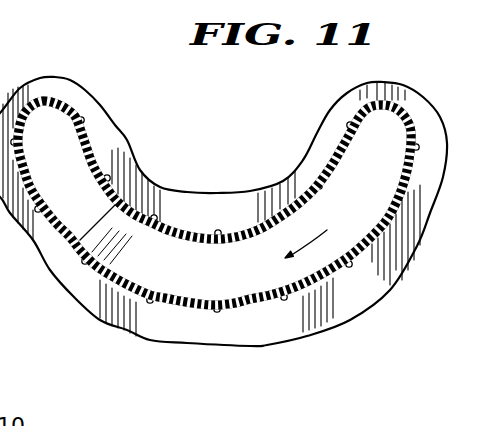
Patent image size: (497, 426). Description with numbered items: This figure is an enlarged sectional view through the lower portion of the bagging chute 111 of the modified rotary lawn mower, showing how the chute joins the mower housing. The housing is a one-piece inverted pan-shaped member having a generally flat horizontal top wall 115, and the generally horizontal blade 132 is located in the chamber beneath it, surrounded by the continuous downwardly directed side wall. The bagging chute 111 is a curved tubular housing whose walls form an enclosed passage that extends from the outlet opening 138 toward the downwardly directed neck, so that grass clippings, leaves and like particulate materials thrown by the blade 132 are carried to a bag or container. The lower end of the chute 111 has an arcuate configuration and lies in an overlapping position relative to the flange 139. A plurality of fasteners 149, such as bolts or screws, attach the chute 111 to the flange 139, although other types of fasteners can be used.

The bagging chute 111 is at (223, 232).
The top wall 115 is at (110, 160).
The blade 132 is at (118, 268).
The outlet opening 138 is at (203, 214).
The flange 139 is at (335, 174).
The fasteners 149 is at (150, 301).